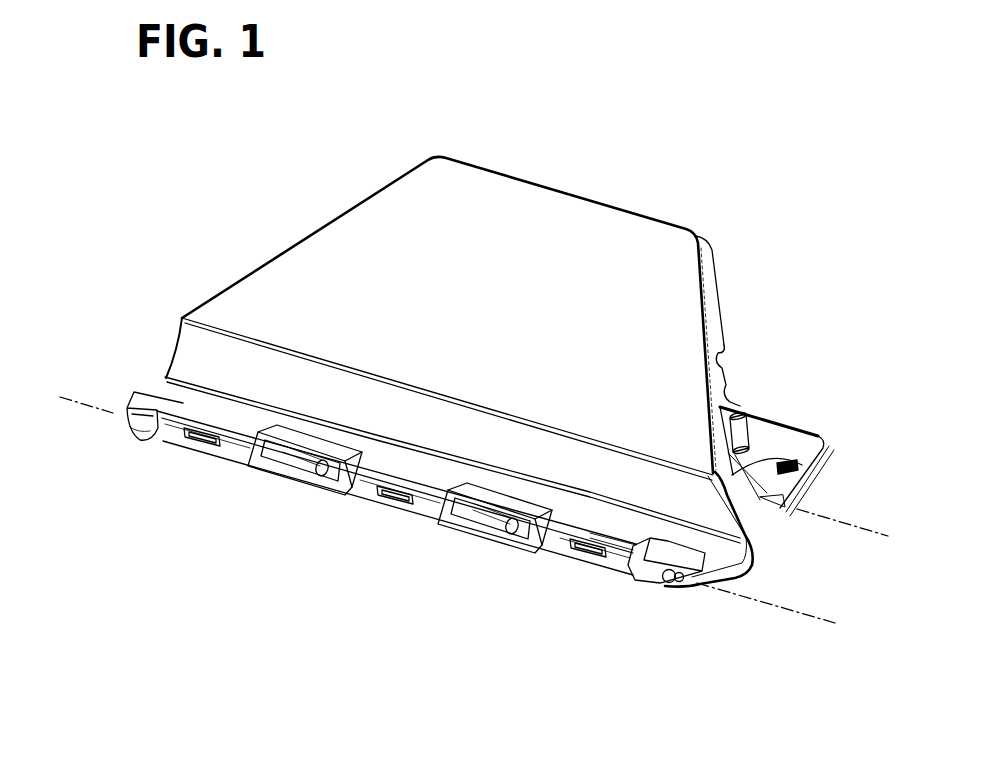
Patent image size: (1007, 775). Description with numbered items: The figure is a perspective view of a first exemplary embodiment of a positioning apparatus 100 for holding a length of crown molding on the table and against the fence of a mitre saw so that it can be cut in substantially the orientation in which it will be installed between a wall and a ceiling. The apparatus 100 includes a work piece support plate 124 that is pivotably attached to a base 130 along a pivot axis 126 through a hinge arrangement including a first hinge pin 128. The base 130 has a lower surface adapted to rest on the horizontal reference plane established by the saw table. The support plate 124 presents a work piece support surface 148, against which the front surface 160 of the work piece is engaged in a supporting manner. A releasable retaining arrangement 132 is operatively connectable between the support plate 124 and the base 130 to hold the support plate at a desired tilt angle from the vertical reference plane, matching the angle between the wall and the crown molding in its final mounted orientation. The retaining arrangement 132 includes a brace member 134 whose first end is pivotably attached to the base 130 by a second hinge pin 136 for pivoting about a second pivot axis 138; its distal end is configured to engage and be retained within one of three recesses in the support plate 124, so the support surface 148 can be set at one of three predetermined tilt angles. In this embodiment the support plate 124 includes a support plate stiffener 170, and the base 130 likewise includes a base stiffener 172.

The positioning apparatus 100 is at (492, 401).
The work piece support surface 148 is at (300, 267).
The front surface 160 is at (200, 350).
The work piece support plate 124 is at (692, 294).
The support plate stiffener 170 is at (727, 337).
The releasable retaining arrangement 132 is at (756, 407).
The brace member 134 is at (790, 438).
The base stiffener 172 is at (790, 442).
The second hinge pin 136 is at (798, 451).
The second pivot axis 138 is at (847, 523).
The base 130 is at (765, 535).
The pivot axis 126 is at (806, 614).
The first hinge pin 128 is at (671, 586).